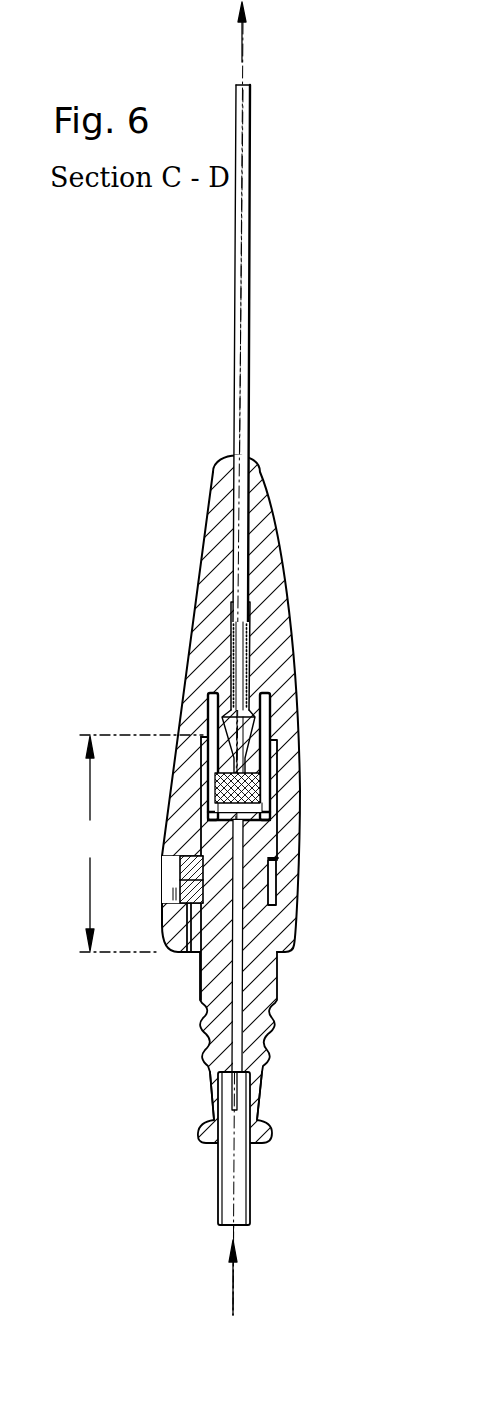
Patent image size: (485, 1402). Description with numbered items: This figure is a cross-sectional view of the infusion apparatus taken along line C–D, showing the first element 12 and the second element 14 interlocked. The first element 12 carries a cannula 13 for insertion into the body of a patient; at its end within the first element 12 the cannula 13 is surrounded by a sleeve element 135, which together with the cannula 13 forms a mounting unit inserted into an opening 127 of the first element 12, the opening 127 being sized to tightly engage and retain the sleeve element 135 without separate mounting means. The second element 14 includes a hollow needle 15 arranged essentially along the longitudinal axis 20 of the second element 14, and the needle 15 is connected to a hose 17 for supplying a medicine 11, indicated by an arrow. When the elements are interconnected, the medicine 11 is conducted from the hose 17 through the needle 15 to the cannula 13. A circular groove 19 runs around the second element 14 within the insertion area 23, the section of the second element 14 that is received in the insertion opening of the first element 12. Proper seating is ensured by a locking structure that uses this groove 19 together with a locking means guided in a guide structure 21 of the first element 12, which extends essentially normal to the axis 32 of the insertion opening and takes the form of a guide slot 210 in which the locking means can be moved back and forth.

The medicine 11 is at (242, 38).
The first element 12 is at (265, 497).
The cannula 13 is at (250, 278).
The second element 14 is at (277, 987).
The needle 15 is at (244, 918).
The hose 17 is at (250, 1190).
The groove 19 is at (226, 912).
The longitudinal axis 20 is at (248, 1048).
The guide structure 21 is at (170, 887).
The guide slot 210 is at (158, 887).
The insertion area 23 is at (137, 843).
The axis of the insertion opening 32 is at (269, 716).
The opening 127 is at (278, 738).
The sleeve element 135 is at (262, 712).